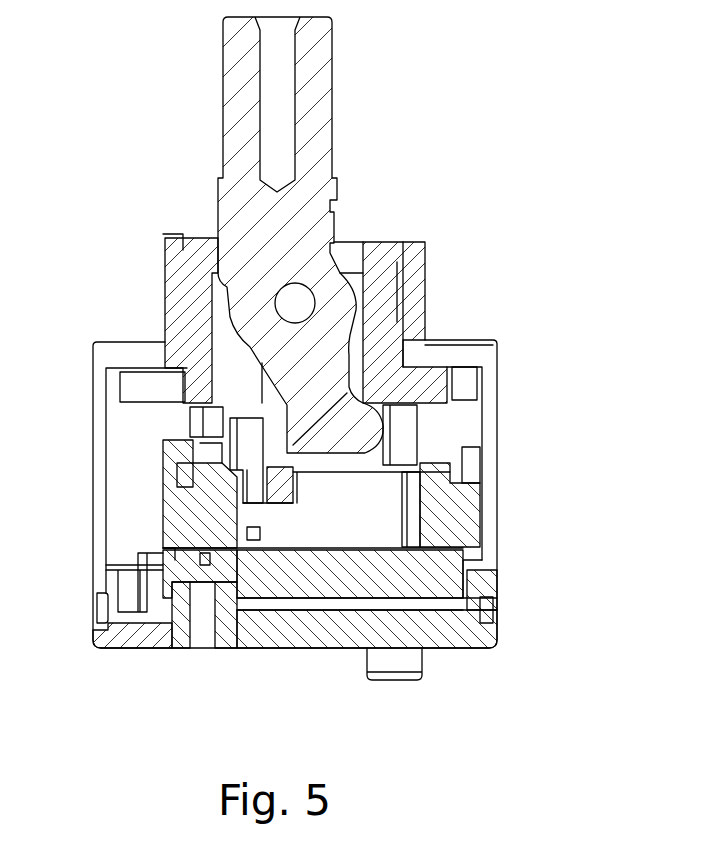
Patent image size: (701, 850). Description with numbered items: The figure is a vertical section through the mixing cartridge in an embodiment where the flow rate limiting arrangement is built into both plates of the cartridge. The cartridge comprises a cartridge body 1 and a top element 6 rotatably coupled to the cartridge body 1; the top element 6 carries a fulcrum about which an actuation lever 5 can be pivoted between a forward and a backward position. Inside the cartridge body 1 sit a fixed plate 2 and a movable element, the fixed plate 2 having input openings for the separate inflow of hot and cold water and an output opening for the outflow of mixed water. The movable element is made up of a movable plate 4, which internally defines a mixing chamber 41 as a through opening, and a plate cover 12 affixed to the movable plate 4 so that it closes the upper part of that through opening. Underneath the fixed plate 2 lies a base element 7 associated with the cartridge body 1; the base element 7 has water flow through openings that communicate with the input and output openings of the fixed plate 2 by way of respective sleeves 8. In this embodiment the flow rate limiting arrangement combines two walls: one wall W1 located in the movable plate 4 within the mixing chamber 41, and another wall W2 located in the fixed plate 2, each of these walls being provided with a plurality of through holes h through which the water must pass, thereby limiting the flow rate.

The actuation lever 5 is at (312, 120).
The top element 6 is at (405, 330).
The cartridge body 1 is at (495, 507).
The plate cover 12 is at (462, 450).
The mixing chamber 41 is at (163, 480).
The movable plate 4 is at (483, 533).
The base element 7 is at (263, 653).
The sleeve 8 is at (182, 628).
The fixed plate 2 is at (92, 606).
The wall W2 is at (172, 558).
The through holes h is at (203, 558).
The wall W1 is at (263, 533).